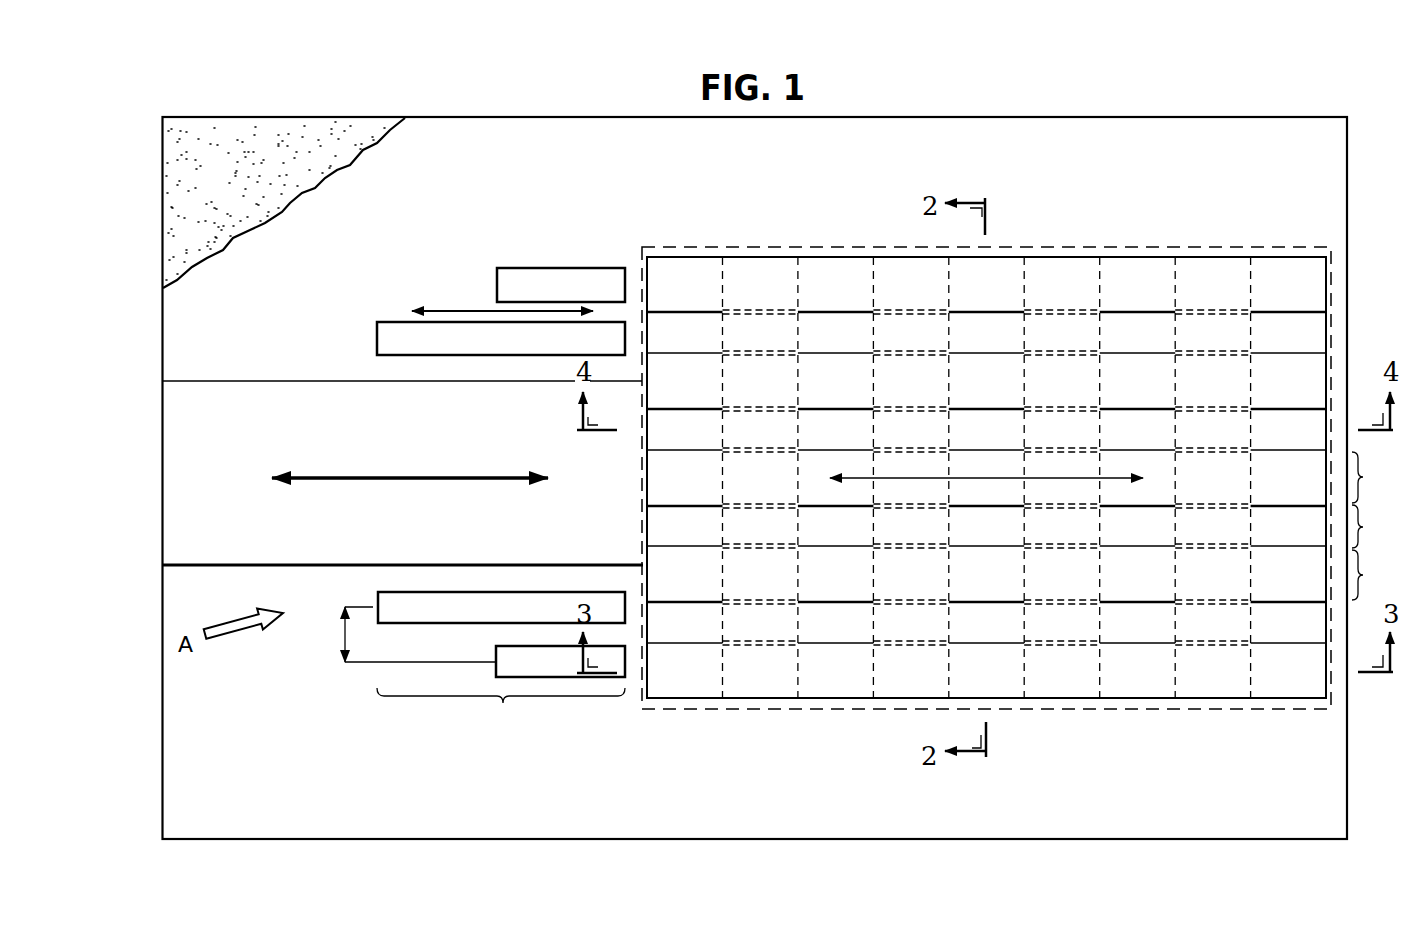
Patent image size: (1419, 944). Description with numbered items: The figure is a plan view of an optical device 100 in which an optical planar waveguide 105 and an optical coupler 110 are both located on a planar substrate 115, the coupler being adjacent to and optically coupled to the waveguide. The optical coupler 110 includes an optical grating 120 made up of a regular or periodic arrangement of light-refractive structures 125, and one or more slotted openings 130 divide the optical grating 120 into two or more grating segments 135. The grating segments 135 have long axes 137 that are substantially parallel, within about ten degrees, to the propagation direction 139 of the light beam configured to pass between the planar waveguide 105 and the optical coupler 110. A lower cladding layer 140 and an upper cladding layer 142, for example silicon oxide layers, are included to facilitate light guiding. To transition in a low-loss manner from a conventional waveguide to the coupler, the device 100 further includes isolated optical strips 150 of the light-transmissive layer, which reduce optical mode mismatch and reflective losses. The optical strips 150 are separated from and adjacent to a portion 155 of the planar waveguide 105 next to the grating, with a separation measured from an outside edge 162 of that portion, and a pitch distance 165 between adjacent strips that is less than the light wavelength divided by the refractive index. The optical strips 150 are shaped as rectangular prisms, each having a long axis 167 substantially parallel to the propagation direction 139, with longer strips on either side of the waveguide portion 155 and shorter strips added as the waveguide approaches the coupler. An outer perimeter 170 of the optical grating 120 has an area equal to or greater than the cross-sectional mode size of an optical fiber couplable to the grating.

The optical device 100 is at (1218, 95).
The optical planar waveguide 105 is at (250, 362).
The optical coupler 110 is at (1087, 212).
The planar substrate 115 is at (1348, 765).
The optical grating 120 is at (1137, 256).
The light-refractive structures 125 is at (833, 265).
The slotted openings 130 is at (1381, 526).
The grating segments 135 is at (1381, 526).
The long axes 137 is at (968, 477).
The propagation direction 139 is at (410, 477).
The lower cladding layer 140 is at (462, 125).
The upper cladding layer 142 is at (238, 120).
The isolated optical strips 150 is at (562, 267).
The portion of the planar waveguide 155 is at (501, 713).
The outside edge 162 is at (410, 568).
The pitch distance 165 is at (345, 635).
The long axis 167 is at (473, 309).
The outer perimeter 170 is at (742, 246).